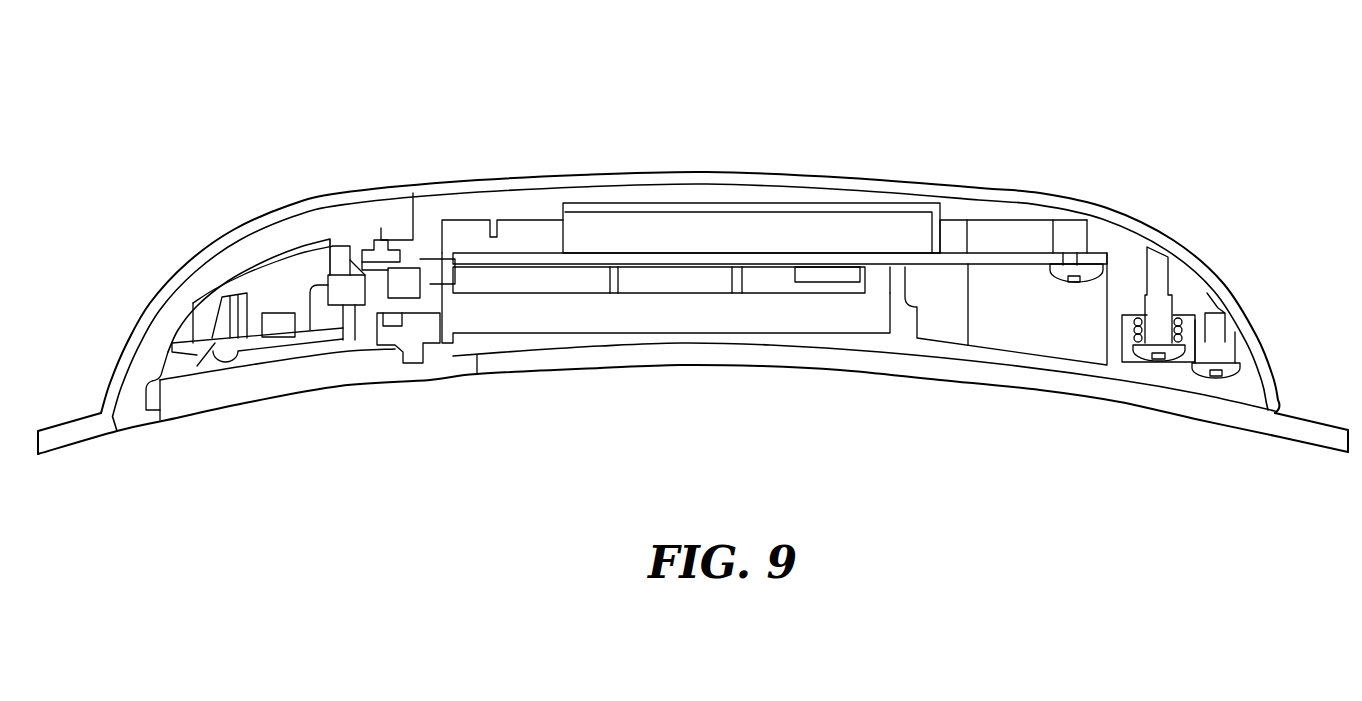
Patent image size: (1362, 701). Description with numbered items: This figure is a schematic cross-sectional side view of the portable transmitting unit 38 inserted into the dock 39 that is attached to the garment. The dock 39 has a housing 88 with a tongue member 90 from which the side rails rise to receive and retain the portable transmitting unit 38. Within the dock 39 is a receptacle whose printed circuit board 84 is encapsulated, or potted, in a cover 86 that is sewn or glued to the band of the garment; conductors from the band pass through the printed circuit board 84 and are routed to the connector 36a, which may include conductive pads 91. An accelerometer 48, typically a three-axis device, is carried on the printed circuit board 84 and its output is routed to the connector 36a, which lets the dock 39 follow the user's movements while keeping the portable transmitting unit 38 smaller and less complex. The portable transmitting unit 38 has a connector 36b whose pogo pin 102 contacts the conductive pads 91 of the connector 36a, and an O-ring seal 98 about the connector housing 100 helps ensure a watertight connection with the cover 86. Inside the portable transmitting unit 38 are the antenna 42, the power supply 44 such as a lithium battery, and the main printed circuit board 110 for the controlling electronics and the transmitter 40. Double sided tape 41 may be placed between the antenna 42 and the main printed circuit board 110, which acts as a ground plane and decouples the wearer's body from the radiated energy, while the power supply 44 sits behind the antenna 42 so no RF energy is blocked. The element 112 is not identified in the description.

The dock 39 is at (268, 88).
The housing 88 is at (133, 325).
The cover 86 is at (193, 296).
The tongue member 90 is at (1122, 395).
The printed circuit board 84 is at (258, 338).
The accelerometer 48 is at (283, 323).
The connector 36a is at (347, 292).
The connector 36b is at (411, 275).
The O-ring seal 98 is at (383, 246).
The pogo pin 102 is at (370, 265).
The conductive pads 91 is at (358, 272).
The connector housing 100 is at (415, 318).
The main printed circuit board 110 is at (583, 256).
The double sided tape 41 is at (771, 236).
The antenna 42 is at (843, 207).
The portable transmitting unit 38 is at (705, 171).
The post 112 is at (923, 235).
The power supply 44 is at (872, 317).
The transmitter 40 is at (815, 280).